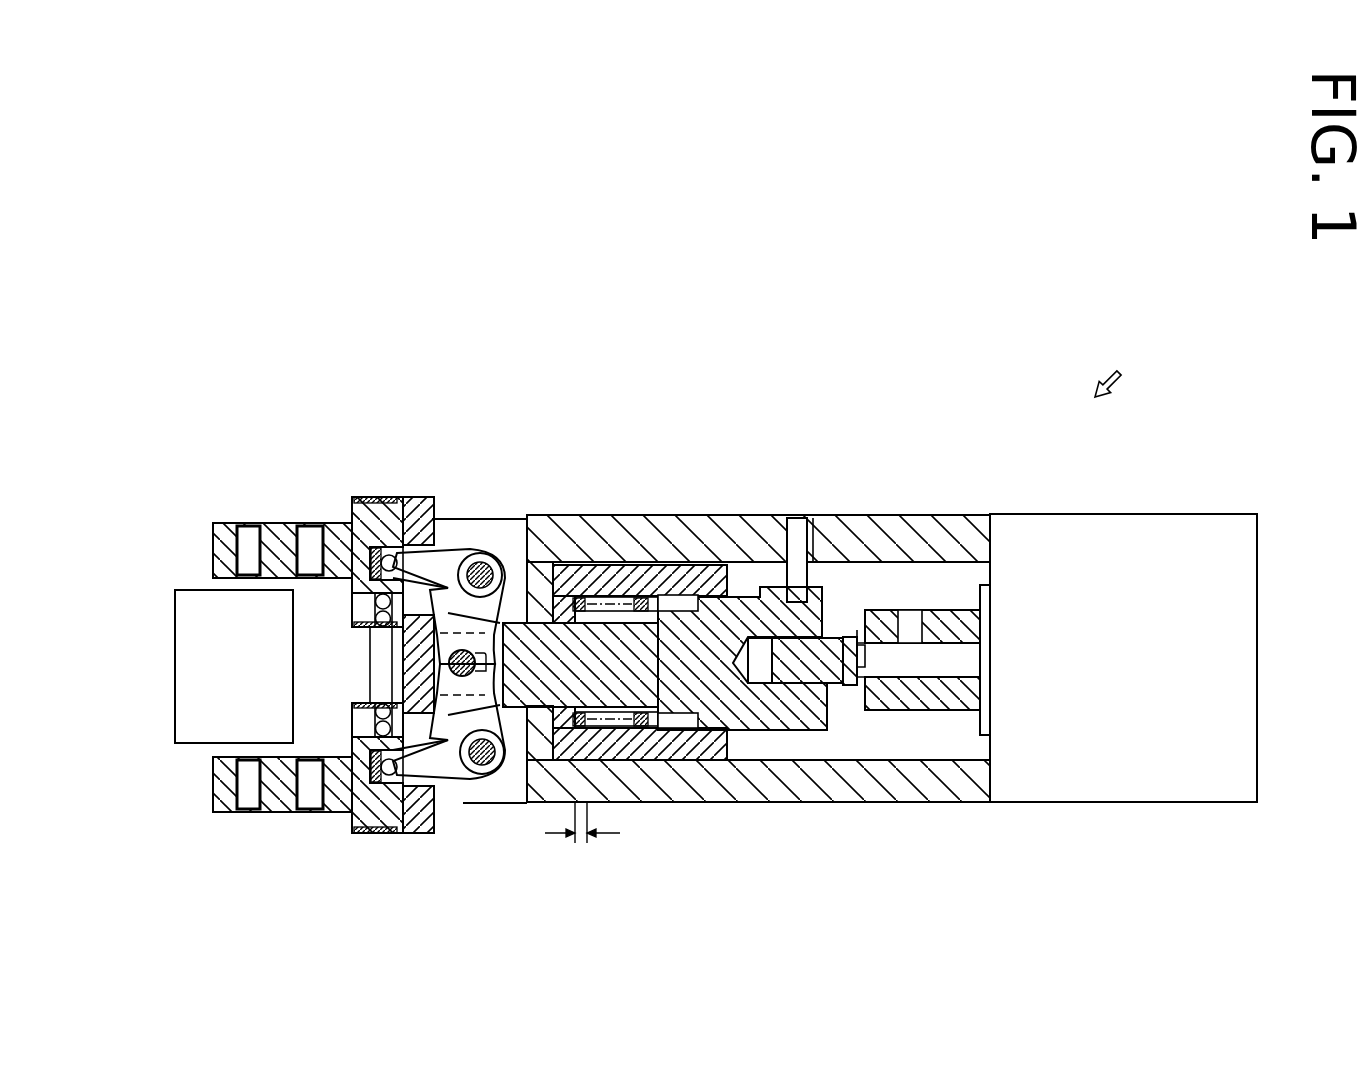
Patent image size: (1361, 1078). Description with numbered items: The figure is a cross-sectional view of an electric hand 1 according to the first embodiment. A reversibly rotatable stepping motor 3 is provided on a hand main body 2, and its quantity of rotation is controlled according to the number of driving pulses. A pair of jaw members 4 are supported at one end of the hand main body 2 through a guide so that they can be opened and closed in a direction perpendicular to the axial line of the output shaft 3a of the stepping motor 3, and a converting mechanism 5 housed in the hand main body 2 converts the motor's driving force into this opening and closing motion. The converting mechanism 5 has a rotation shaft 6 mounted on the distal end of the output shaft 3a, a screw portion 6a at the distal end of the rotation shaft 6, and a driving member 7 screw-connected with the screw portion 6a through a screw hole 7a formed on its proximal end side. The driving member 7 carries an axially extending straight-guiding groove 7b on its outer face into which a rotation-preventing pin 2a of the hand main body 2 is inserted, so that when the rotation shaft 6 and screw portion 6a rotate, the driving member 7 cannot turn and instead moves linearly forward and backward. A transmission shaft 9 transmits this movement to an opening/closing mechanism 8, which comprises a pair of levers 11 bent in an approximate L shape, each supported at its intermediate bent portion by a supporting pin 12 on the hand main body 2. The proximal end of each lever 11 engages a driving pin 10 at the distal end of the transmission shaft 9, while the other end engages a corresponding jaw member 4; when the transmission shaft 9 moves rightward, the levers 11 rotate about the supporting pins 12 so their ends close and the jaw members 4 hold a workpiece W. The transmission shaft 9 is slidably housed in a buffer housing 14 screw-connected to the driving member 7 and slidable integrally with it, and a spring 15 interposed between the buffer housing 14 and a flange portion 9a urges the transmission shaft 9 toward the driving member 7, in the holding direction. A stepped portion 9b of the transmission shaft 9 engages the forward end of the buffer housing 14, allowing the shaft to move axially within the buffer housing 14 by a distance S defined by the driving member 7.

The electric hand 1 is at (1119, 358).
The hand main body 2 is at (890, 513).
The rotation-preventing pin 2a is at (822, 512).
The stepping motor 3 is at (1025, 530).
The output shaft 3a is at (968, 663).
The jaw member 4 is at (282, 533).
The converting mechanism 5 is at (705, 535).
The rotation shaft 6 is at (918, 695).
The screw portion 6a is at (828, 672).
The driving member 7 is at (730, 703).
The screw hole 7a is at (785, 686).
The straight-guiding groove 7b is at (767, 592).
The opening/closing mechanism 8 is at (451, 475).
The transmission shaft 9 is at (552, 680).
The flange portion 9a is at (657, 565).
The stepped portion 9b is at (585, 605).
The driving pin 10 is at (448, 661).
The lever 11 is at (475, 540).
The supporting pin 12 is at (494, 560).
The buffer housing 14 is at (672, 745).
The spring 15 is at (633, 597).
The distance S is at (582, 844).
The workpiece W is at (187, 600).